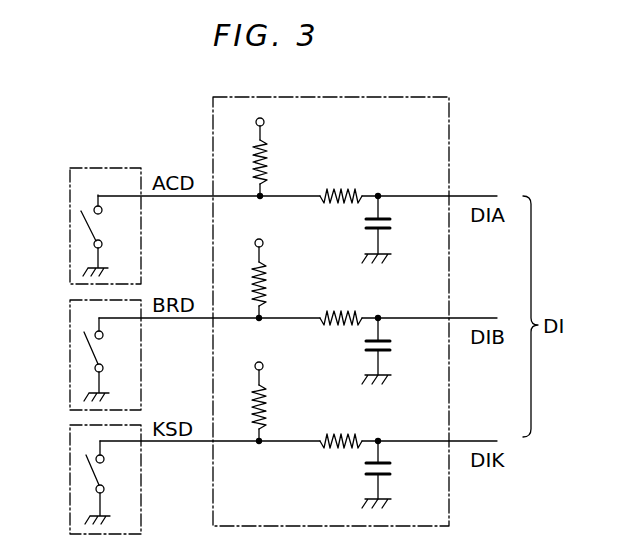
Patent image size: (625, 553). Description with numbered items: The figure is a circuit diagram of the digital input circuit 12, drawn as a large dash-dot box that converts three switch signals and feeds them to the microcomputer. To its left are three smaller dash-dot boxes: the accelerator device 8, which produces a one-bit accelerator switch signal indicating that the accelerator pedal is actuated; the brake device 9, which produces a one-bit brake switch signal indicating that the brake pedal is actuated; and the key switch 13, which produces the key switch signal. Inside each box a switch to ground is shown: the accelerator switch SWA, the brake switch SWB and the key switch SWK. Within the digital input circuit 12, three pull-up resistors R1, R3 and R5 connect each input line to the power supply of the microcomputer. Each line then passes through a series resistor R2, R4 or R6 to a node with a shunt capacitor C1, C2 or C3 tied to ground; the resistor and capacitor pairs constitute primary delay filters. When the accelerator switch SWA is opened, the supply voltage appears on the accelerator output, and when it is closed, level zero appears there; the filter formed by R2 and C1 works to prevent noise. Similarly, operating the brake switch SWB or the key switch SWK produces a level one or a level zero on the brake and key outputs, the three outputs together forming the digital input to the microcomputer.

The accelerator device 8 is at (70, 187).
The brake device 9 is at (70, 318).
The digital input circuit 12 is at (213, 137).
The key switch 13 is at (70, 441).
The accelerator switch SWA is at (87, 224).
The brake switch SWB is at (90, 350).
The key switch SWK is at (92, 470).
The resistor R1 is at (266, 150).
The resistor R2 is at (338, 190).
The resistor R3 is at (265, 272).
The resistor R4 is at (338, 312).
The resistor R5 is at (265, 394).
The resistor R6 is at (338, 435).
The capacitor C1 is at (388, 224).
The capacitor C2 is at (388, 346).
The capacitor C3 is at (388, 469).